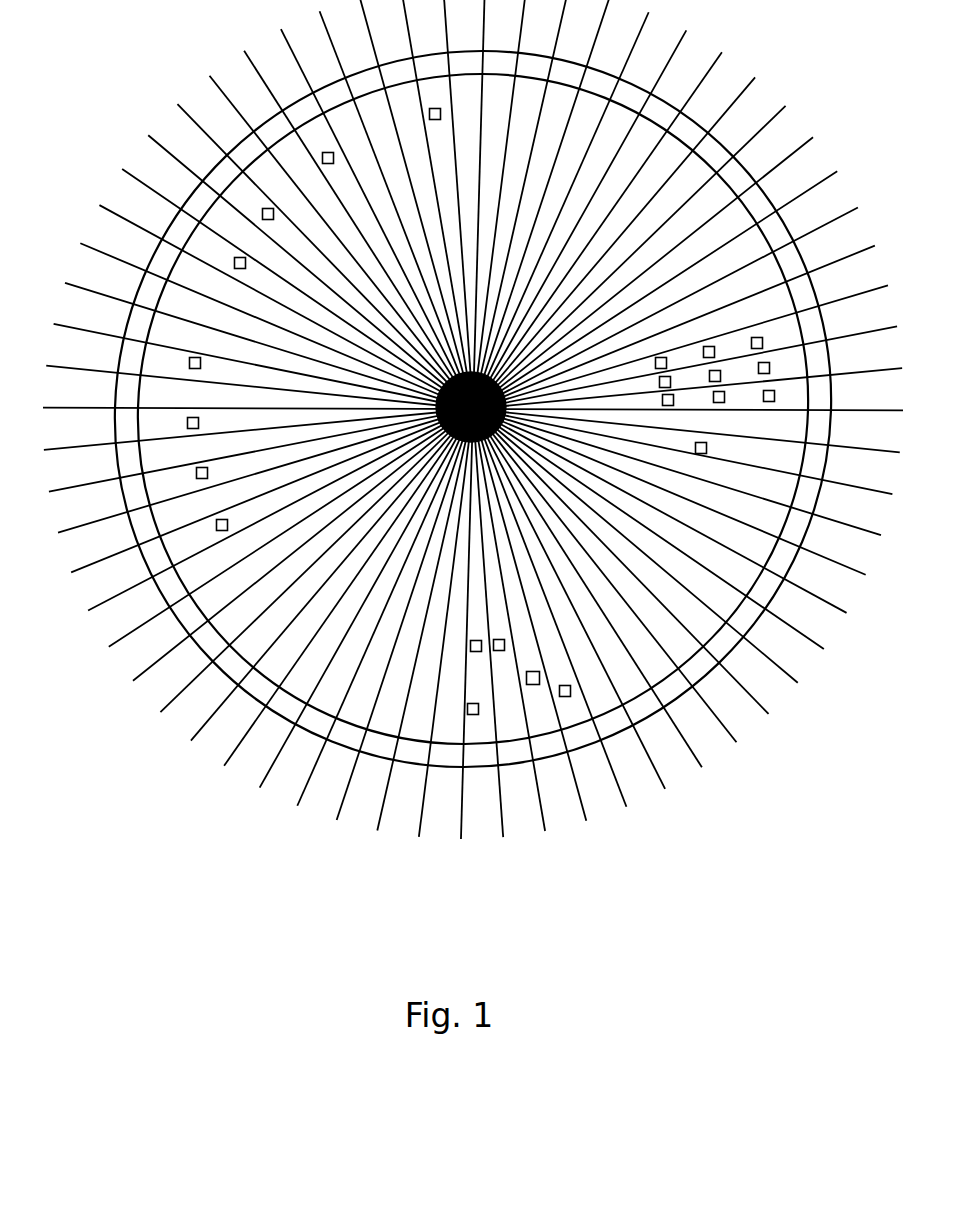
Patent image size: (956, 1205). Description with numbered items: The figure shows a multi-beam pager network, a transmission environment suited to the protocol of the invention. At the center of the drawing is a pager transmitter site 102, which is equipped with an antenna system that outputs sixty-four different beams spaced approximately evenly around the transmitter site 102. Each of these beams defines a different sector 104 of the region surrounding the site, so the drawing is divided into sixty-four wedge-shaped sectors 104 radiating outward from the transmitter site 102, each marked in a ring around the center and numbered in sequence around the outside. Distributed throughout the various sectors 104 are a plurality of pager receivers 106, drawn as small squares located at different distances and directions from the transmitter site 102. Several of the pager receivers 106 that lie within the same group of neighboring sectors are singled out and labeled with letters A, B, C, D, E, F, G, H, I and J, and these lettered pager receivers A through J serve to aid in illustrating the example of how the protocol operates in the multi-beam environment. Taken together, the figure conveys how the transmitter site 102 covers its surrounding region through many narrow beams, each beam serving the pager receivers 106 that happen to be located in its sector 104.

The pager transmitter site 102 is at (478, 372).
The sector 104 is at (472, 409).
The pager receiver 106 is at (375, 403).
The labeled pager receiver A is at (763, 342).
The labeled pager receiver B is at (674, 400).
The labeled pager receiver C is at (770, 368).
The labeled pager receiver D is at (715, 352).
The labeled pager receiver E is at (725, 397).
The labeled pager receiver F is at (721, 376).
The labeled pager receiver G is at (667, 363).
The labeled pager receiver H is at (775, 396).
The labeled pager receiver I is at (671, 382).
The labeled pager receiver J is at (707, 448).